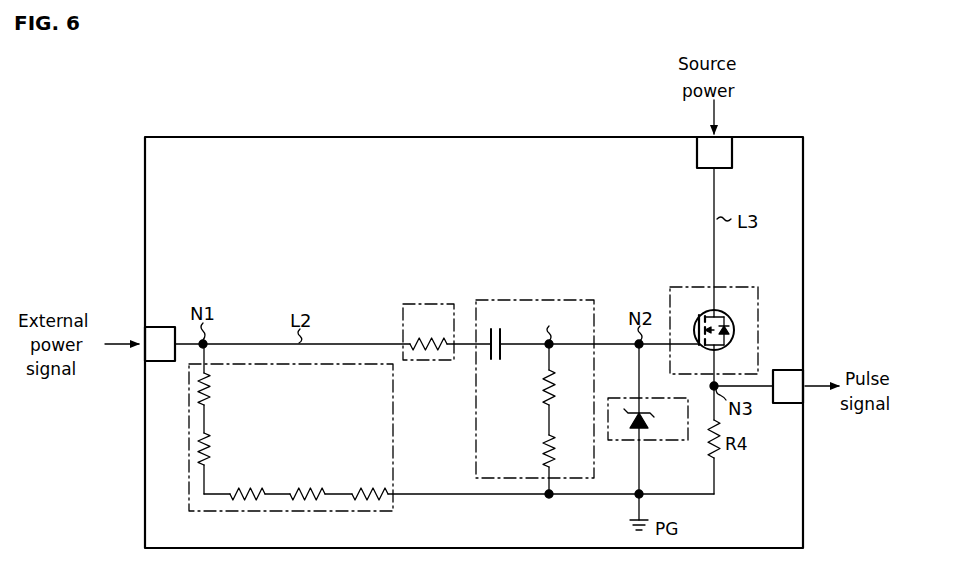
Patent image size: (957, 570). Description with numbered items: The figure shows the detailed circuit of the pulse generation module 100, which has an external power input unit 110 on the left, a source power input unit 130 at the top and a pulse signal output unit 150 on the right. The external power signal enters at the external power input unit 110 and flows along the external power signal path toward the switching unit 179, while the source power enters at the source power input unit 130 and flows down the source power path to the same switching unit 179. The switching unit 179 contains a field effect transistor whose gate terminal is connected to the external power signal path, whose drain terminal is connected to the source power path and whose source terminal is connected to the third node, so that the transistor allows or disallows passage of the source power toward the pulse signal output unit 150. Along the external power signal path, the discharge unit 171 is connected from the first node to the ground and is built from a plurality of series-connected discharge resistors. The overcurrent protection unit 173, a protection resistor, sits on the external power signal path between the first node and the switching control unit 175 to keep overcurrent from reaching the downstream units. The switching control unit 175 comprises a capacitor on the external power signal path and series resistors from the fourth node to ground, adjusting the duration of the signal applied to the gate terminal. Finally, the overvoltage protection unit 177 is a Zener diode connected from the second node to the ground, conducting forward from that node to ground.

The pulse generation module 100 is at (280, 136).
The external power input unit 110 is at (166, 326).
The source power input unit 130 is at (734, 151).
The pulse signal output unit 150 is at (782, 368).
The discharge unit 171 is at (395, 409).
The overcurrent protection unit 173 is at (440, 304).
The switching control unit 175 is at (570, 300).
The overvoltage protection unit 177 is at (616, 400).
The switching unit 179 is at (744, 287).